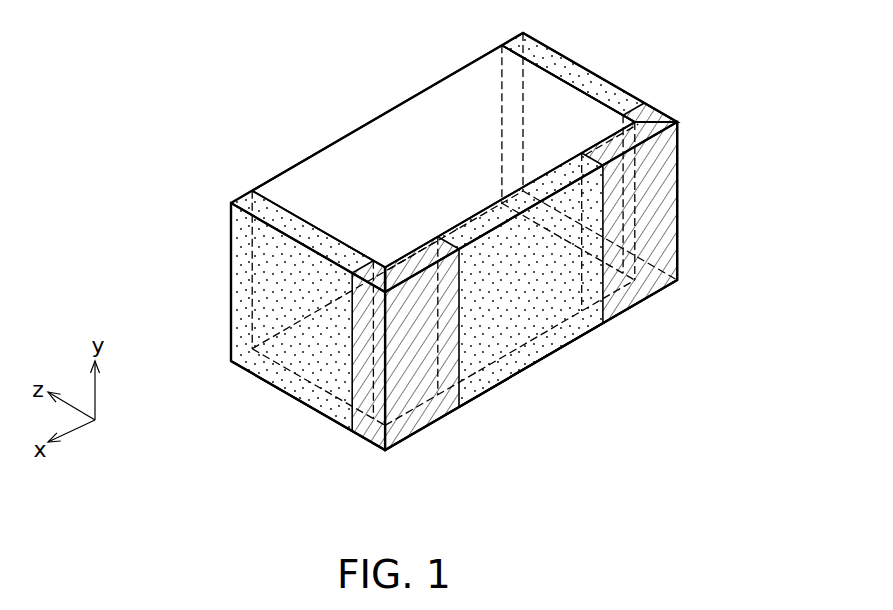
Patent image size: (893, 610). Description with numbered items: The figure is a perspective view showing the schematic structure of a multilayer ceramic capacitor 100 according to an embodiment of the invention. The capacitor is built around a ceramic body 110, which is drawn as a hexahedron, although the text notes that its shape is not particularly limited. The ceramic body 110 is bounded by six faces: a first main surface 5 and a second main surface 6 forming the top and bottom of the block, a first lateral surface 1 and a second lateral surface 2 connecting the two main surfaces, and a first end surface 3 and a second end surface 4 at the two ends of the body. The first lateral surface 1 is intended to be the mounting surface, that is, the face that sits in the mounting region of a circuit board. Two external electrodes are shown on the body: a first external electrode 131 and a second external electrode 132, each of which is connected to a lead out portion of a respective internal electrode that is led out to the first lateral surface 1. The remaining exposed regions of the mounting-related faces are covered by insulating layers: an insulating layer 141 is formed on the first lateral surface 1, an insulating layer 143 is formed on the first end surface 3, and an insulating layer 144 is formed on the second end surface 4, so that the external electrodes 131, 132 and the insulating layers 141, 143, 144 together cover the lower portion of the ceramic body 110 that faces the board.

The multilayer ceramic capacitor 100 is at (168, 51).
The ceramic body 110 is at (263, 233).
The first lateral surface 1 is at (556, 316).
The second lateral surface 2 is at (322, 193).
The first end surface 3 is at (258, 305).
The second end surface 4 is at (548, 103).
The first main surface 5 is at (413, 126).
The second main surface 6 is at (363, 378).
The first external electrode 131 is at (420, 447).
The second external electrode 132 is at (660, 268).
The insulating layer 141 is at (500, 388).
The insulating layer 143 is at (290, 357).
The insulating layer 144 is at (608, 92).